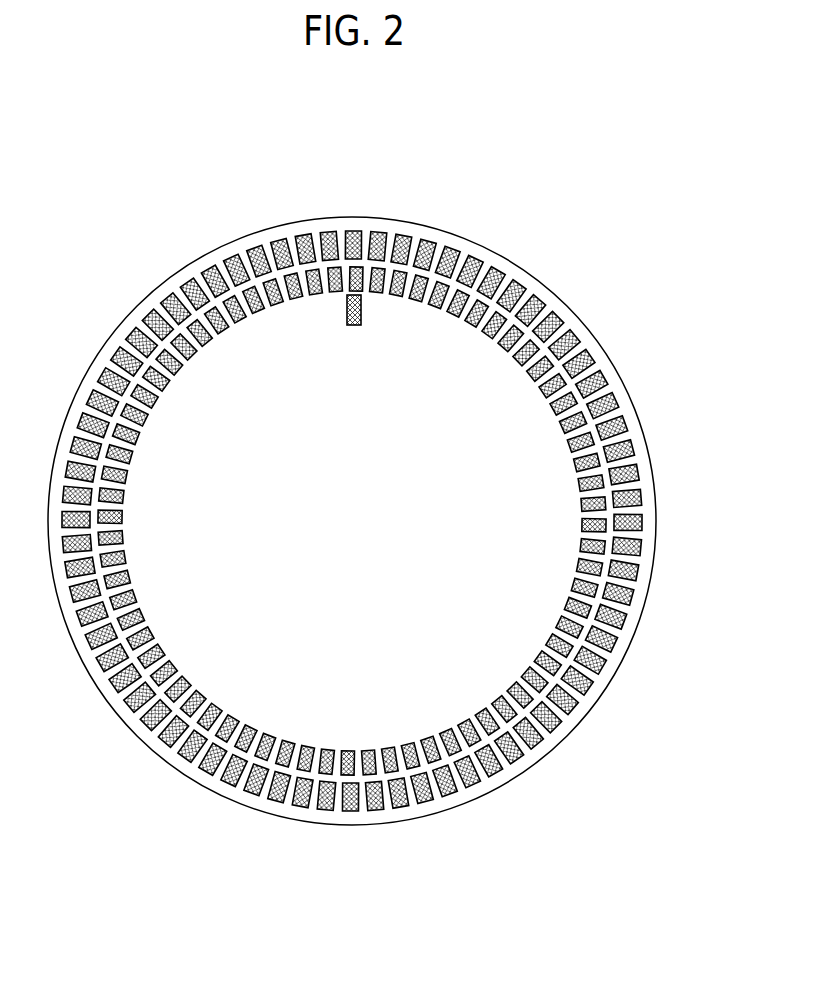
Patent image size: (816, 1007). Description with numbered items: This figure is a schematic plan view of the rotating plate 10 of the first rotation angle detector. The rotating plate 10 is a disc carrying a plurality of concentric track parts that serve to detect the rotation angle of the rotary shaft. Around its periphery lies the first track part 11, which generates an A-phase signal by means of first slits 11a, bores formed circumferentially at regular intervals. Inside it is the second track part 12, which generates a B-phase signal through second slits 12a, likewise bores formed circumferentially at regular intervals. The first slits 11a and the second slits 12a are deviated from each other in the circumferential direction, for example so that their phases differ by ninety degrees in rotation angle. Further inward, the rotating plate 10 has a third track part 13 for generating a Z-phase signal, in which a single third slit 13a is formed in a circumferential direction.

The rotating plate 10 is at (508, 150).
The first track part 11 is at (692, 229).
The first slits 11a is at (507, 265).
The second track part 12 is at (692, 650).
The second slits 12a is at (565, 641).
The third track part 13 is at (366, 315).
The third slit 13a is at (350, 295).